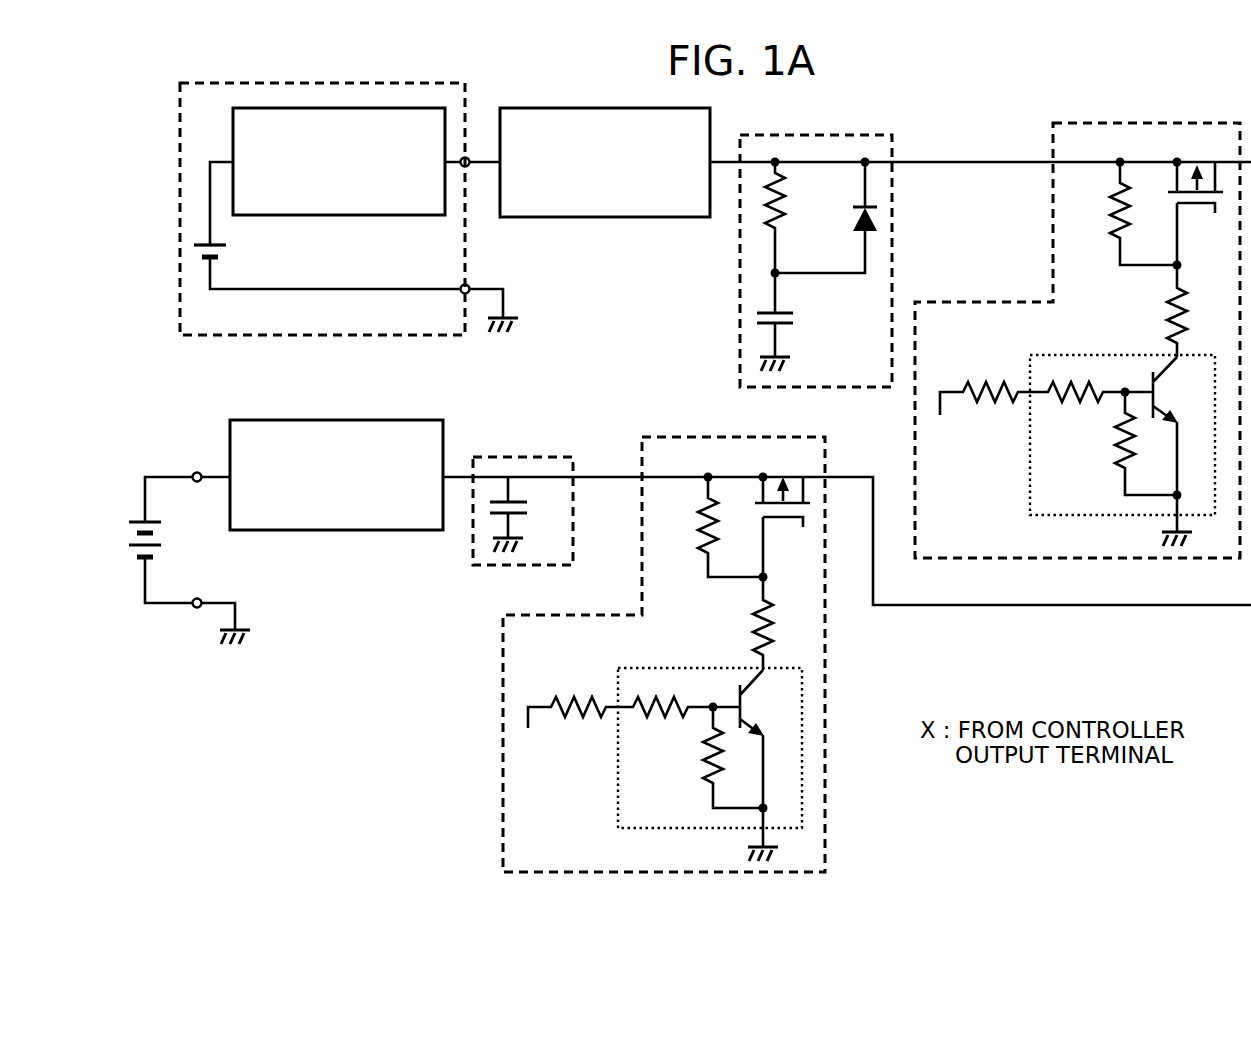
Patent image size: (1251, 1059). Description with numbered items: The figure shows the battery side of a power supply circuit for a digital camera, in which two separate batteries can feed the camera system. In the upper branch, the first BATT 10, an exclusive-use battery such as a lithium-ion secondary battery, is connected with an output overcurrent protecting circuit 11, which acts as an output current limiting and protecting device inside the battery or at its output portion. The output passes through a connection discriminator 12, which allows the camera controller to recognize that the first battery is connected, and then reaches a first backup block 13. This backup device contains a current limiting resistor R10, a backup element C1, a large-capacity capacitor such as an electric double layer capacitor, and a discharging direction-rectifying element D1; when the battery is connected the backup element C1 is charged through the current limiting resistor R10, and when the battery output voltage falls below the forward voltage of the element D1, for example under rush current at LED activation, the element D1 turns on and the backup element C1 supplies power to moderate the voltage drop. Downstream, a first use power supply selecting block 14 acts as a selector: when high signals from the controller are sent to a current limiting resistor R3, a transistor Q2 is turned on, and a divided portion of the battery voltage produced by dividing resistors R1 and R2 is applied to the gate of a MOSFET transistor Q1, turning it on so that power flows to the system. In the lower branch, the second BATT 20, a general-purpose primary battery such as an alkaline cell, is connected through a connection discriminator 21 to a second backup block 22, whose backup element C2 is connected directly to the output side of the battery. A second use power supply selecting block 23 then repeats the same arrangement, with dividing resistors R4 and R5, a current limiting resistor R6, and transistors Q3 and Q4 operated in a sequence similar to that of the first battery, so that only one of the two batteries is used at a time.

The first BATT 10 is at (238, 260).
The output overcurrent protecting circuit 11 is at (412, 215).
The connection discriminator 12 is at (676, 217).
The first backup block 13 is at (806, 261).
The first use power supply selecting block 14 is at (1077, 340).
The second BATT 20 is at (182, 552).
The connection discriminator 21 is at (405, 530).
The second backup block 22 is at (552, 511).
The second use power supply selecting block 23 is at (664, 654).
The current limiting resistor R10 is at (799, 200).
The discharging direction-rectifying element D1 is at (890, 216).
The backup element C1 is at (794, 322).
The transistor Q1 is at (1178, 173).
The dividing resistor R1 is at (1103, 210).
The dividing resistor R2 is at (1160, 315).
The current limiting resistor R3 is at (990, 381).
The transistor Q2 is at (1122, 422).
The backup element C2 is at (525, 514).
The transistor Q3 is at (765, 487).
The dividing resistor R4 is at (692, 525).
The dividing resistor R5 is at (747, 627).
The current limiting resistor R6 is at (578, 694).
The transistor Q4 is at (710, 735).